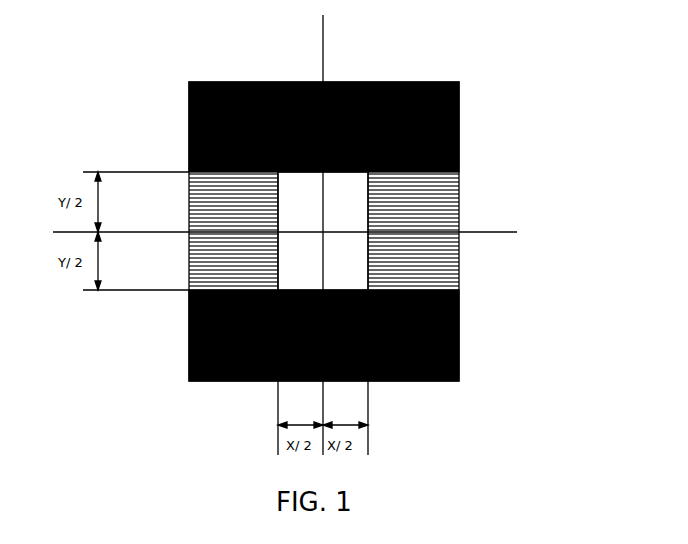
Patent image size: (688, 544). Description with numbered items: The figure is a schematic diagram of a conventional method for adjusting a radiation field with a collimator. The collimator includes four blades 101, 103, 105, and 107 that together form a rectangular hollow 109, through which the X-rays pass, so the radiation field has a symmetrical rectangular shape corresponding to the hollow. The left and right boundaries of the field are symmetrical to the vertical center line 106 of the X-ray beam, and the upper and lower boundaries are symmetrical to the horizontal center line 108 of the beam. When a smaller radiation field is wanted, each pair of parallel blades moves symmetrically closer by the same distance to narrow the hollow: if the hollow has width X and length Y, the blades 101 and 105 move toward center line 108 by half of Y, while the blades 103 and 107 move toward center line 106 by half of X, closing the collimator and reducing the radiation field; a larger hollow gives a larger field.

The blade 101 is at (189, 84).
The blade 103 is at (459, 188).
The blade 105 is at (459, 332).
The center line of the X-ray beam 106 is at (324, 43).
The blade 107 is at (189, 252).
The center line of the X-ray beam 108 is at (340, 232).
The rectangular hollow 109 is at (338, 193).